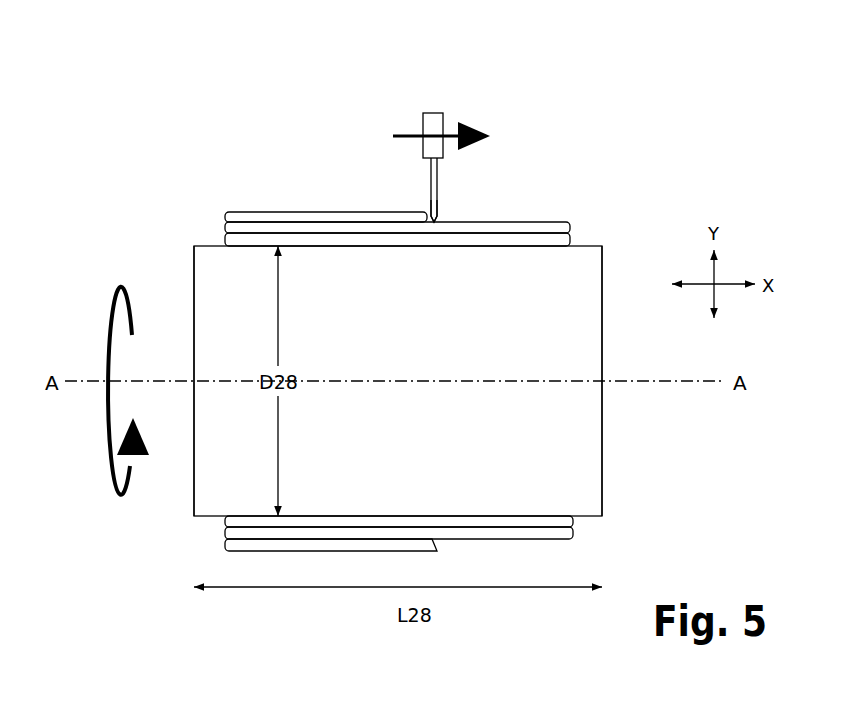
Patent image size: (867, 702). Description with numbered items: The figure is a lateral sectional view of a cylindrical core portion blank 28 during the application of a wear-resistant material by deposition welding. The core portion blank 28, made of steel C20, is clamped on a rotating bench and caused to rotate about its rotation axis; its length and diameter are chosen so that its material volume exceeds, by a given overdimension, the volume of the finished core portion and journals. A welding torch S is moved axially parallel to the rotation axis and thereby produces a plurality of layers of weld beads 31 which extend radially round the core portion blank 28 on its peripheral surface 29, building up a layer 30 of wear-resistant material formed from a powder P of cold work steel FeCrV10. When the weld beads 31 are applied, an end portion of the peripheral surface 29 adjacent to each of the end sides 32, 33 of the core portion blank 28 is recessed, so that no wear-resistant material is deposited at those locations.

The core portion blank 28 is at (578, 307).
The peripheral surface 29 is at (206, 243).
The layer 30 is at (306, 213).
The weld beads 31 is at (378, 222).
The end side 32 is at (192, 296).
The end side 33 is at (603, 440).
The welding torch S is at (433, 114).
The powder P is at (440, 194).